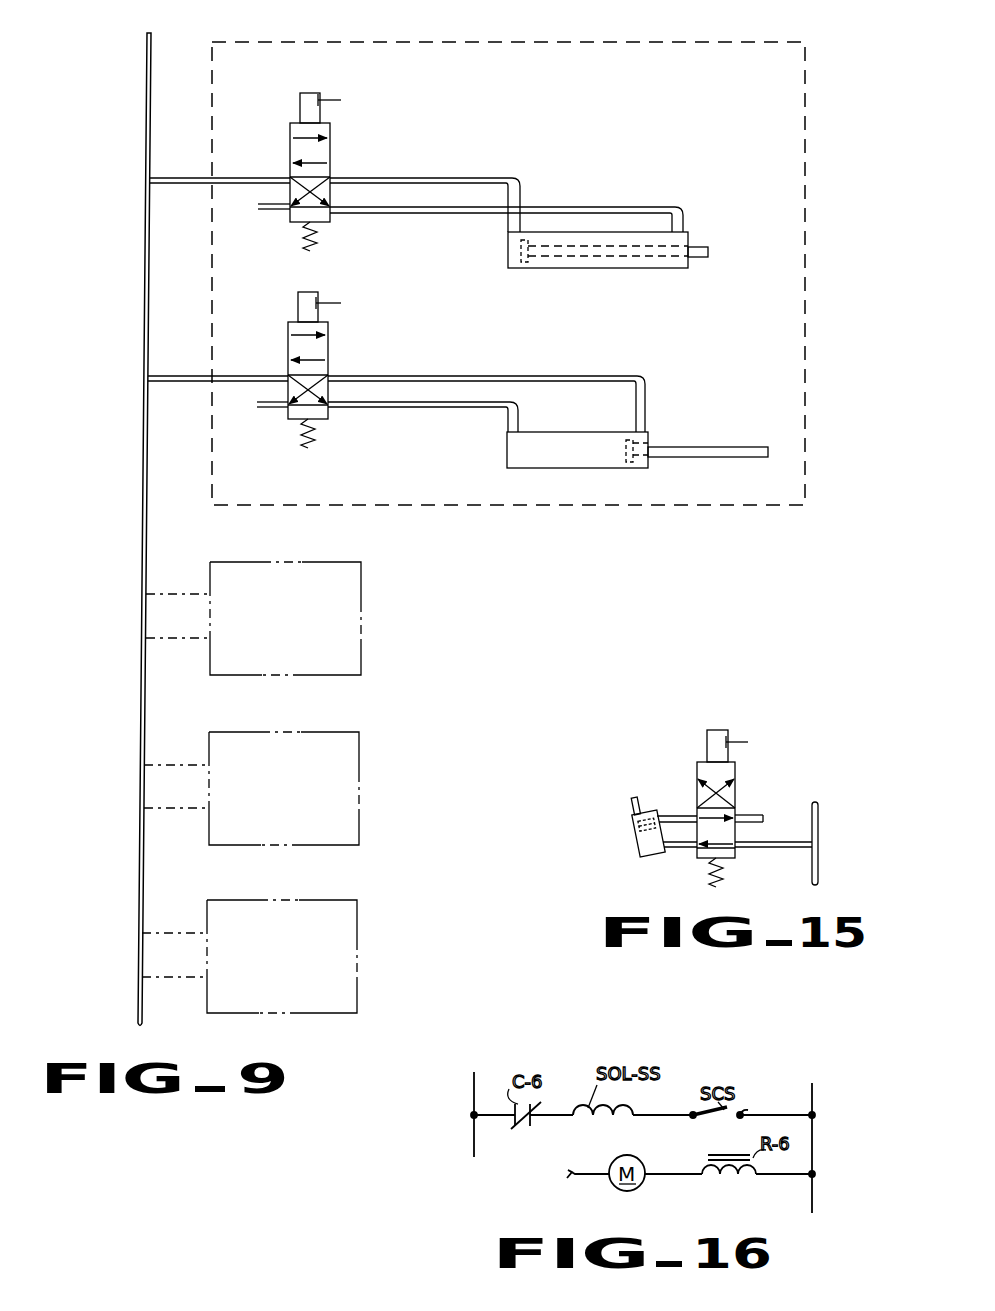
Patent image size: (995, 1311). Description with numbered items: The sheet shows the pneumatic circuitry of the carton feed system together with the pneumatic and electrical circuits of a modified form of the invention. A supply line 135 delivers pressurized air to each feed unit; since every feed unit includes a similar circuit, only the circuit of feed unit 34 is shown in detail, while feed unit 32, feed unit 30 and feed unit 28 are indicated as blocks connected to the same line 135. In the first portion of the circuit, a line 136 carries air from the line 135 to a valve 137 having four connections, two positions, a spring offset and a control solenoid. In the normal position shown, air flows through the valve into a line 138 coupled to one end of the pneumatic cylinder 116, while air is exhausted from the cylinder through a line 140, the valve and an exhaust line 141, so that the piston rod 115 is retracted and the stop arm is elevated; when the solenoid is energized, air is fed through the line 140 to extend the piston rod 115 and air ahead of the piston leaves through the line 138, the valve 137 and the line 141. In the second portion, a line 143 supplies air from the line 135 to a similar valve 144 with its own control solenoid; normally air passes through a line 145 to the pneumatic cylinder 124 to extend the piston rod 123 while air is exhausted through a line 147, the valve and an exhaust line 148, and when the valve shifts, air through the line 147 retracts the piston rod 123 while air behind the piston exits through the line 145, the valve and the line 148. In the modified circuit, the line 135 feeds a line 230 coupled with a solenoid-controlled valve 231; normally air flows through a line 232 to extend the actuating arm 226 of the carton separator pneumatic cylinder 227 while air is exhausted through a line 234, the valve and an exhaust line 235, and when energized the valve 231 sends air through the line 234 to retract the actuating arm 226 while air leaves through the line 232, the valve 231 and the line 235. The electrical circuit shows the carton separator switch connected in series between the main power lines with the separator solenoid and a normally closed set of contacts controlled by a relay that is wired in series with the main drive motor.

In FIG. 9, the line 135 is at (146, 110).
In FIG. 15, the line 135 is at (820, 815).
In FIG. 9, the feed unit 34 is at (372, 42).
In FIG. 9, the feed unit 32 is at (362, 570).
In FIG. 9, the feed unit 30 is at (359, 738).
In FIG. 9, the feed unit 28 is at (357, 908).
In FIG. 9, the line 136 is at (226, 177).
In FIG. 9, the valve 137 is at (331, 130).
In FIG. 9, the line 138 is at (395, 213).
In FIG. 9, the line 140 is at (398, 180).
In FIG. 9, the exhaust line 141 is at (275, 210).
In FIG. 9, the piston rod 115 is at (698, 245).
In FIG. 9, the pneumatic cylinder 116 is at (578, 269).
In FIG. 9, the line 143 is at (236, 375).
In FIG. 9, the valve 144 is at (329, 338).
In FIG. 9, the line 145 is at (445, 409).
In FIG. 9, the line 147 is at (508, 380).
In FIG. 9, the exhaust line 148 is at (281, 410).
In FIG. 9, the piston rod 123 is at (678, 448).
In FIG. 9, the pneumatic cylinder 124 is at (563, 469).
In FIG. 15, the valve 231 is at (737, 771).
In FIG. 15, the exhaust line 235 is at (751, 817).
In FIG. 15, the line 234 is at (685, 816).
In FIG. 15, the line 232 is at (682, 848).
In FIG. 15, the line 230 is at (749, 850).
In FIG. 15, the carton separator pneumatic cylinder 227 is at (637, 847).
In FIG. 15, the actuating arm 226 is at (638, 806).